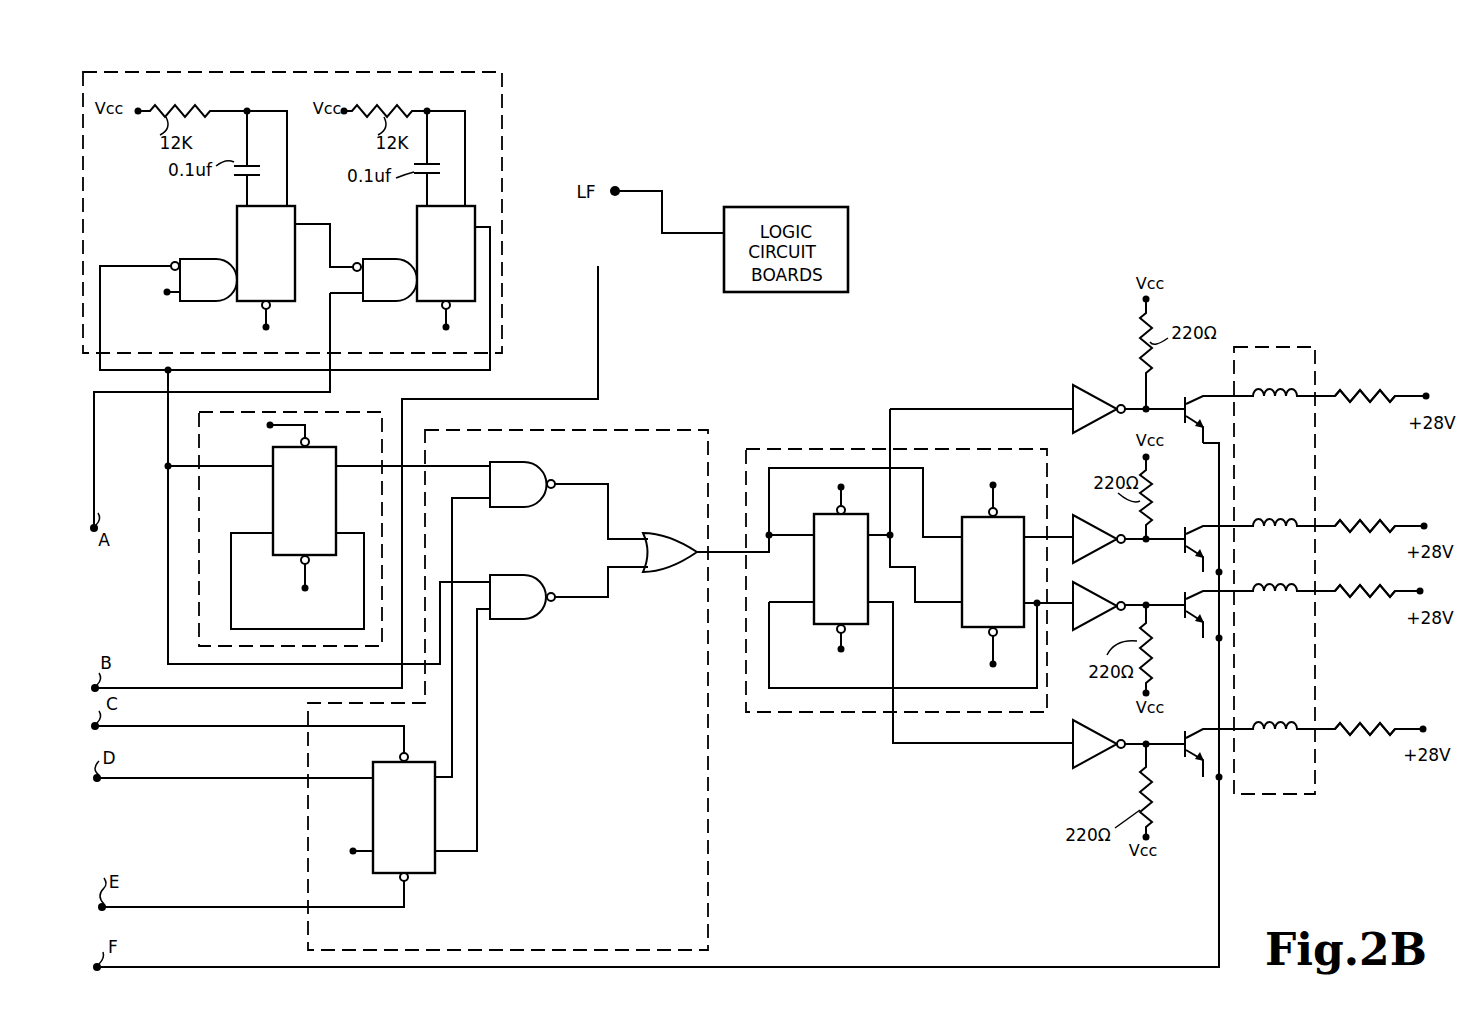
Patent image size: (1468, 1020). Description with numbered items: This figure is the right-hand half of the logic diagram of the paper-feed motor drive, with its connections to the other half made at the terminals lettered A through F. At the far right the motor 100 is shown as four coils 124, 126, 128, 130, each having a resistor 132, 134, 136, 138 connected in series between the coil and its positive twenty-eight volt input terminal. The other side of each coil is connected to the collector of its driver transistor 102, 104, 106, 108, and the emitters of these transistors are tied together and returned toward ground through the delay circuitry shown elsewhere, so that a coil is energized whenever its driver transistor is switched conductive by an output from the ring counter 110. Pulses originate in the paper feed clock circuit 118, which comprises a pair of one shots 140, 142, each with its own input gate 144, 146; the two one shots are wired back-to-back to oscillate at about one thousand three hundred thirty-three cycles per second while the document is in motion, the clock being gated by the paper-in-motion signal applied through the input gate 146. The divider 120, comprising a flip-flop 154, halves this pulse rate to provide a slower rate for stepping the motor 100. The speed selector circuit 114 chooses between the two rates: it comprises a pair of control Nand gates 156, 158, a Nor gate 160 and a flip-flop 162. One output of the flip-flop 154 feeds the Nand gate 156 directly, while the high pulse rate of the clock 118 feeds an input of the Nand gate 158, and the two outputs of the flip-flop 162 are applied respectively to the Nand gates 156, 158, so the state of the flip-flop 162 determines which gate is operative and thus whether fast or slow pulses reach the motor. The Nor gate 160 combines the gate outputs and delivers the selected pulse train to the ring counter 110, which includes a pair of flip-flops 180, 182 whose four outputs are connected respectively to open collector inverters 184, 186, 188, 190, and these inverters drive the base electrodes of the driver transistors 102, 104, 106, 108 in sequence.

The motor 100 is at (1263, 345).
The driver transistor 102 is at (1180, 397).
The driver transistor 104 is at (1186, 516).
The driver transistor 106 is at (1178, 590).
The driver transistor 108 is at (1184, 718).
The ring counter 110 is at (820, 447).
The speed selector circuit 114 is at (622, 430).
The paper feed clock circuit 118 is at (505, 313).
The divider 120 is at (370, 410).
The coil 124 is at (1288, 390).
The coil 126 is at (1281, 516).
The coil 128 is at (1283, 597).
The coil 130 is at (1290, 734).
The resistor 132 is at (1367, 394).
The resistor 134 is at (1372, 524).
The resistor 136 is at (1369, 600).
The resistor 138 is at (1366, 735).
The one shot 140 is at (237, 212).
The one shot 142 is at (417, 225).
The input gate 144 is at (205, 258).
The input gate 146 is at (405, 258).
The flip-flop 154 is at (273, 505).
The Nand gate 156 is at (533, 472).
The Nand gate 158 is at (524, 619).
The Nor gate 160 is at (672, 572).
The flip-flop 162 is at (373, 814).
The flip-flop 180 is at (814, 576).
The flip-flop 182 is at (962, 564).
The open collector inverter 184 is at (1097, 385).
The open collector inverter 186 is at (1096, 516).
The open collector inverter 188 is at (1092, 586).
The open collector inverter 190 is at (1090, 768).